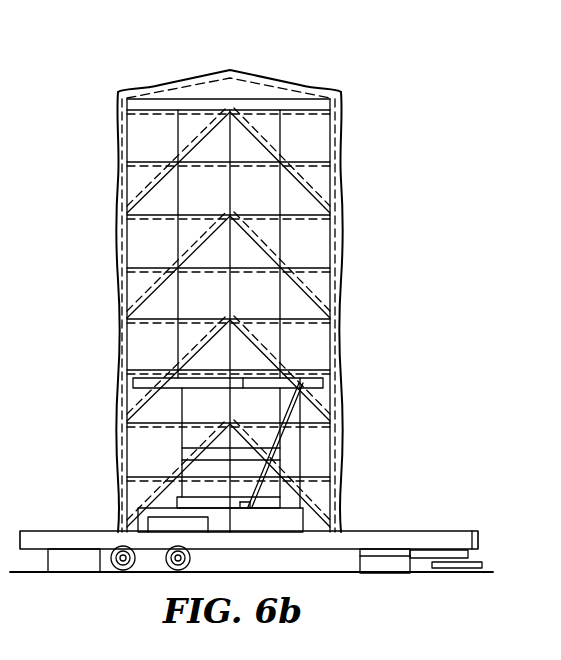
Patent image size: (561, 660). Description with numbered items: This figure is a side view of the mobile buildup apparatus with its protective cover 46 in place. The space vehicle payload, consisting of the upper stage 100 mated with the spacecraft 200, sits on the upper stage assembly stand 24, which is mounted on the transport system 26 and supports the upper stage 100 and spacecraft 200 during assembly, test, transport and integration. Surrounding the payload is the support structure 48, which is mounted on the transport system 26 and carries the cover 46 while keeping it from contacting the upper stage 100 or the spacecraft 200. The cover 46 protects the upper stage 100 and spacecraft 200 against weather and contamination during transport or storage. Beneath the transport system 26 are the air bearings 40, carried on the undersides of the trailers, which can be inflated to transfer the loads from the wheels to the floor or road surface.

The protective cover 46 is at (282, 83).
The support structure 48 is at (308, 165).
The spacecraft 200 is at (280, 201).
The upper stage assembly stand 24 is at (302, 378).
The upper stage 100 is at (280, 407).
The transport system 26 is at (355, 532).
The air bearings 40 is at (72, 560).